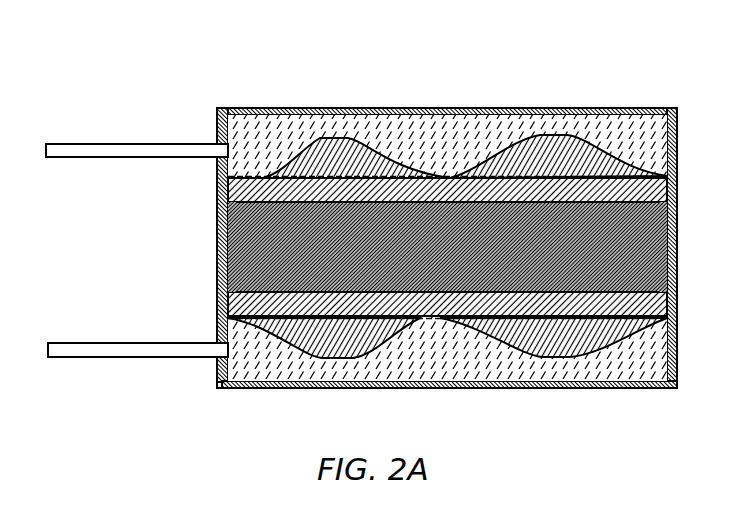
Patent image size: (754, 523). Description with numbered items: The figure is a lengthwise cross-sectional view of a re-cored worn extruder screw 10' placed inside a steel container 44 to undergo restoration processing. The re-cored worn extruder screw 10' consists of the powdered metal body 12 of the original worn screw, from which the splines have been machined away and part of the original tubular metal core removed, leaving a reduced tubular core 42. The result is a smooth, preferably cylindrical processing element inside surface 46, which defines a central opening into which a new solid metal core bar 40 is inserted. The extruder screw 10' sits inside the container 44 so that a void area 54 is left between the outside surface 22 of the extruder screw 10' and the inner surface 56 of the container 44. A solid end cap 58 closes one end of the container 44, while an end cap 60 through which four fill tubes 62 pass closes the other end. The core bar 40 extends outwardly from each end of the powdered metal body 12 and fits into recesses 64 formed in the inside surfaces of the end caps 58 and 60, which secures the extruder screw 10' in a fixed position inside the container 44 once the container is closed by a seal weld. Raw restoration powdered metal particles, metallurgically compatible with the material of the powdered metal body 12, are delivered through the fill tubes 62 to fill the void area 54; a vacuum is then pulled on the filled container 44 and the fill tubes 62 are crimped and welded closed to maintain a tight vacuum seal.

The re-cored worn extruder screw 10' is at (447, 215).
The powdered metal body 12 is at (226, 180).
The outside surface 22 is at (422, 320).
The core bar 40 is at (655, 268).
The reduced tubular core 42 is at (655, 303).
The container 44 is at (505, 108).
The processing element inside surface 46 is at (565, 203).
The void area 54 is at (300, 126).
The inner surface 56 is at (668, 110).
The solid end cap 58 is at (678, 363).
The end cap 60 is at (220, 373).
The fill tubes 62 is at (52, 158).
The recesses 64 is at (230, 256).